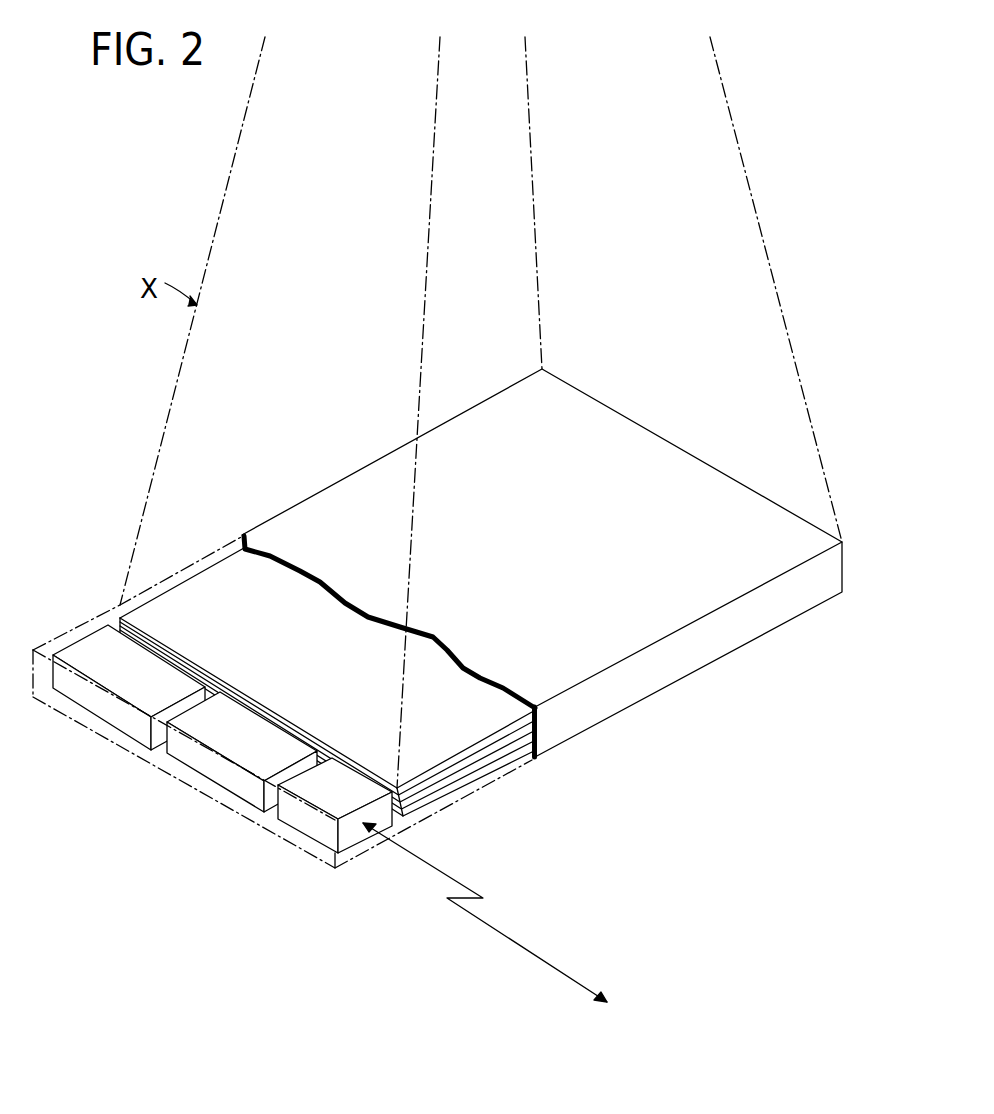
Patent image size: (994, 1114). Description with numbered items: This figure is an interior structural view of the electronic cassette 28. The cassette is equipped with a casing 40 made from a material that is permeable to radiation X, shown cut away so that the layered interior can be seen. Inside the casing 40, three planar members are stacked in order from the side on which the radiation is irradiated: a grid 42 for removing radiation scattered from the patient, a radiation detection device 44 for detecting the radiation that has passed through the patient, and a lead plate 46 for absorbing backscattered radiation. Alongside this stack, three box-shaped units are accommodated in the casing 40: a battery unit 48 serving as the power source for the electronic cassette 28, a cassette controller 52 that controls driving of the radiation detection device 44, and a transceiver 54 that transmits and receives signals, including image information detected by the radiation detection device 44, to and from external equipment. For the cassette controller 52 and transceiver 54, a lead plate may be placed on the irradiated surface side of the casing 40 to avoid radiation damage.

The electronic cassette 28 is at (345, 462).
The casing 40 is at (612, 425).
The grid 42 is at (458, 680).
The radiation detection device 44 is at (485, 753).
The lead plate 46 is at (465, 782).
The battery unit 48 is at (85, 697).
The cassette controller 52 is at (198, 763).
The transceiver 54 is at (310, 825).